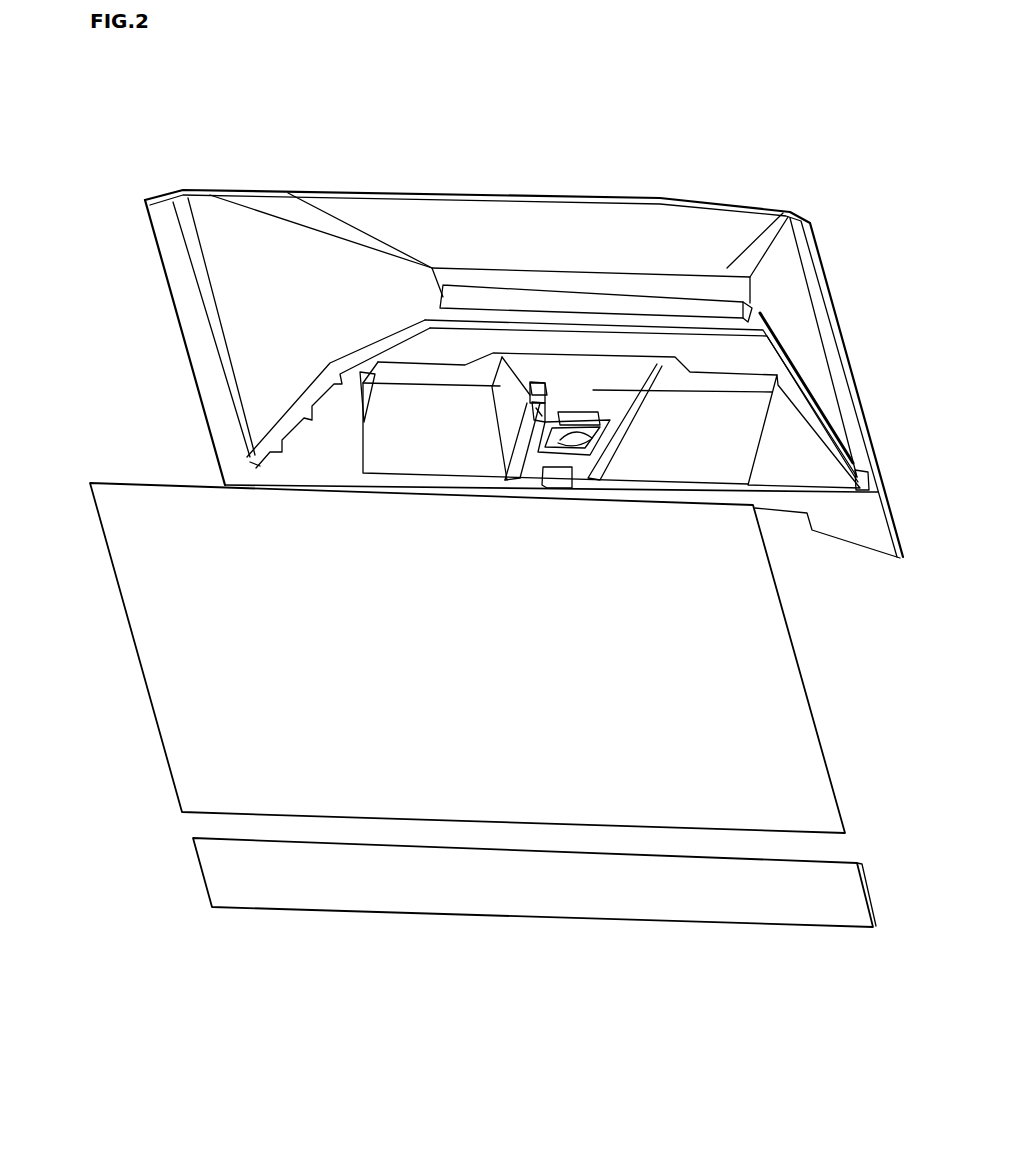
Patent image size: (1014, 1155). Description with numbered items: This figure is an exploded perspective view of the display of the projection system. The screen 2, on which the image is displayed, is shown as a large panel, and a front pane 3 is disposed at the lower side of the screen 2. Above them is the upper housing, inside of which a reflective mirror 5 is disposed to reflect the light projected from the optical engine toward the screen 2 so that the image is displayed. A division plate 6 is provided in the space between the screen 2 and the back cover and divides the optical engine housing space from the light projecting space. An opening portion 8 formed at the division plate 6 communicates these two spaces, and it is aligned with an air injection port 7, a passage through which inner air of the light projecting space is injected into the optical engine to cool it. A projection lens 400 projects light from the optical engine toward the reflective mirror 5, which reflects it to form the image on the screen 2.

The screen 2 is at (120, 528).
The front pane 3 is at (318, 892).
The reflective mirror 5 is at (550, 215).
The division plate 6 is at (733, 438).
The air injection port 7 is at (527, 404).
The opening portion 8 is at (542, 387).
The projection lens 400 is at (603, 433).